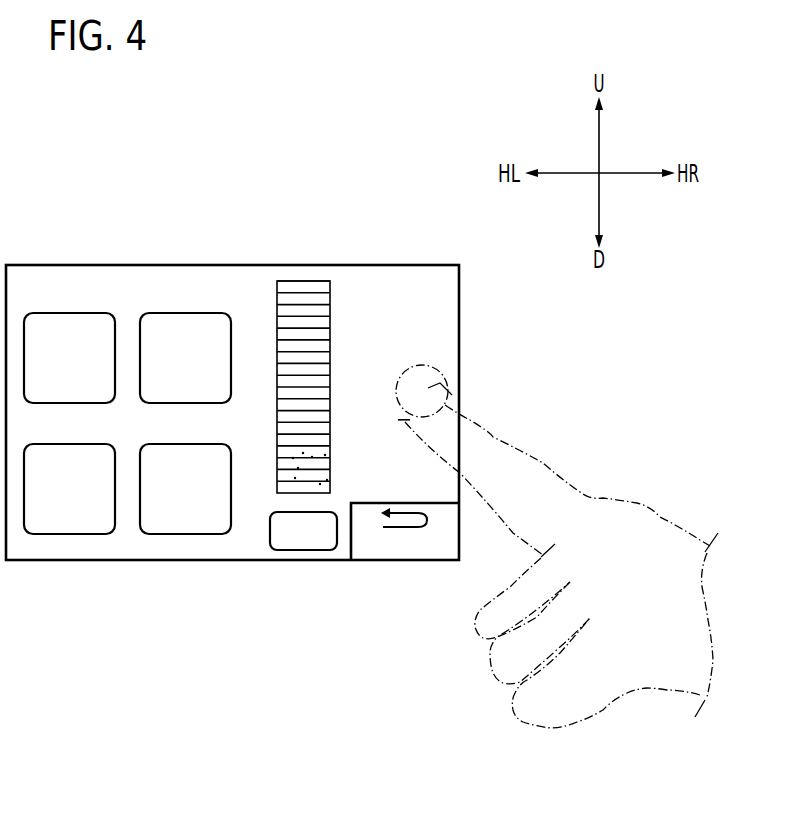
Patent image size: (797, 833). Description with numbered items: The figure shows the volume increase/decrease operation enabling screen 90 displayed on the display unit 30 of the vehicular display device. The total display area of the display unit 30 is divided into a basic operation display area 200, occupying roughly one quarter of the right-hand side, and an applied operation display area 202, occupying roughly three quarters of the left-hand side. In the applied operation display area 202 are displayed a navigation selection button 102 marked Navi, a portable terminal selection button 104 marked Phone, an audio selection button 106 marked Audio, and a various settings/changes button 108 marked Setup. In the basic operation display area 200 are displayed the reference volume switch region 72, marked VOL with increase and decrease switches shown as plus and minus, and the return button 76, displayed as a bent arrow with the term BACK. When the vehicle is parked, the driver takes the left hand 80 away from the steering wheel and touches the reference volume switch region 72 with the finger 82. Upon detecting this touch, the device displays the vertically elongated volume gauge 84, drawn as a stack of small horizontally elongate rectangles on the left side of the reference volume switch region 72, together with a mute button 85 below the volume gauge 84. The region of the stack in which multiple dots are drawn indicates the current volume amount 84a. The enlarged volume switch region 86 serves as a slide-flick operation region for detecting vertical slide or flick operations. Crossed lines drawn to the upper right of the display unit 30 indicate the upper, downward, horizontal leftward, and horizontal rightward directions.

The display unit 30 is at (107, 265).
The volume increase/decrease operation enabling screen 90 is at (270, 275).
The volume gauge 84 is at (298, 281).
The current volume amount 84a is at (277, 448).
The enlarged volume switch region 86 is at (360, 278).
The mute button 85 is at (306, 551).
The return button 76 is at (462, 538).
The reference volume switch region 72 is at (428, 358).
The finger 82 is at (440, 382).
The left hand 80 is at (673, 550).
The navigation selection button 102 is at (70, 313).
The portable terminal selection button 104 is at (157, 313).
The audio selection button 106 is at (70, 444).
The various settings/changes button 108 is at (157, 444).
The applied operation display area 202 is at (352, 598).
The basic operation display area 200 is at (460, 598).